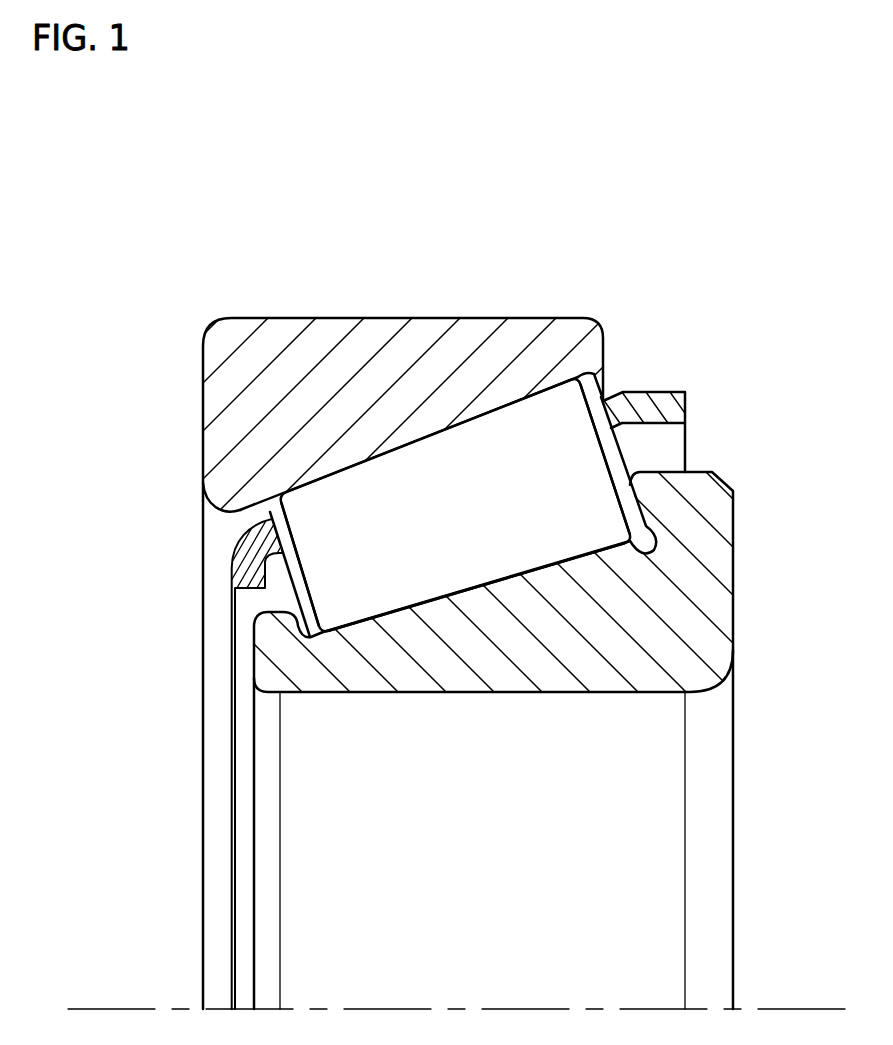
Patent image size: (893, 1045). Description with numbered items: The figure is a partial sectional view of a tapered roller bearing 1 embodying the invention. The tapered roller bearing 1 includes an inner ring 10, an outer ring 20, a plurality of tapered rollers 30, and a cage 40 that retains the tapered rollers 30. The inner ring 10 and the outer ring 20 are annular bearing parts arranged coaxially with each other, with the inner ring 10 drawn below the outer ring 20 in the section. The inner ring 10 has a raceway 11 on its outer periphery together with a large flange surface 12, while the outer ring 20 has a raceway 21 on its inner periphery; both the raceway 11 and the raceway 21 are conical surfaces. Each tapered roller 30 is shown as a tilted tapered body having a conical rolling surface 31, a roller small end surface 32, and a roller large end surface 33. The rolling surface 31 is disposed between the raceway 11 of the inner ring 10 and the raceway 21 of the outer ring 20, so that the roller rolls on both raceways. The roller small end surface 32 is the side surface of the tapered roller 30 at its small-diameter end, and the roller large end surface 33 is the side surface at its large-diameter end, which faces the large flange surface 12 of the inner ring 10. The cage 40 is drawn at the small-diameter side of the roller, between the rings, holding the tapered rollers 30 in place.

The tapered roller bearing 1 is at (282, 305).
The inner ring 10 is at (737, 619).
The raceway 11 is at (517, 576).
The large flange surface 12 is at (638, 506).
The outer ring 20 is at (201, 377).
The raceway 21 is at (420, 438).
The tapered roller 30 is at (592, 393).
The conical rolling surface 31 is at (390, 577).
The roller small end surface 32 is at (292, 586).
The roller large end surface 33 is at (625, 462).
The cage 40 is at (230, 567).